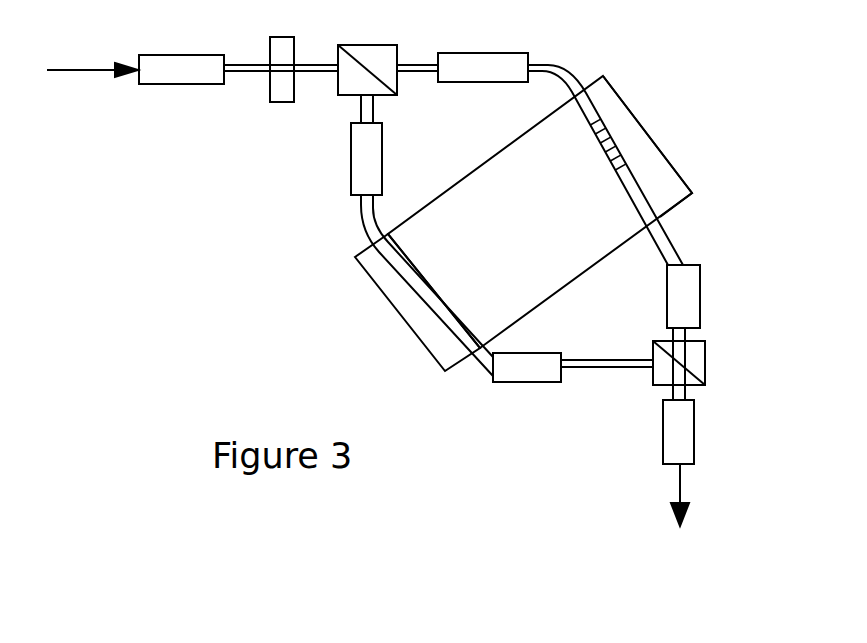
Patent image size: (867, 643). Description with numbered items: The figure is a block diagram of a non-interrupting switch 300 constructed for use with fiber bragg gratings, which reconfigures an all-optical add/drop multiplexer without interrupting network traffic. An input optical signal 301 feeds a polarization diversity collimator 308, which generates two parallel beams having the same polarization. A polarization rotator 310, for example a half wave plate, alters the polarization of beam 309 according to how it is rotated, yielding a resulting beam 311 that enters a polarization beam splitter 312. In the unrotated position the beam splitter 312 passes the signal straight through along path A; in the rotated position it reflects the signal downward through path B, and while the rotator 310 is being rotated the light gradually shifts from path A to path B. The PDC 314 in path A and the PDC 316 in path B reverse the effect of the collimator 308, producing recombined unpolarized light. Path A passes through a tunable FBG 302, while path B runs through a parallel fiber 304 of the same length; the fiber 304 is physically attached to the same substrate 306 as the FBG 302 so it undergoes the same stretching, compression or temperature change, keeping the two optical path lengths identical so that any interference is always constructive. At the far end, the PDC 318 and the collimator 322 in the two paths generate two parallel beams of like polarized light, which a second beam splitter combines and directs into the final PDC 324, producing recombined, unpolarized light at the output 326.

The non-interrupting switch 300 is at (298, 318).
The input optical signal 301 is at (92, 68).
The tunable FBG 302 is at (605, 153).
The parallel fiber 304 is at (380, 285).
The substrate 306 is at (684, 177).
The polarization diversity collimator 308 is at (181, 54).
The beam 309 is at (245, 76).
The polarization rotator 310 is at (280, 51).
The resulting beam 311 is at (320, 76).
The polarization beam splitter 312 is at (367, 54).
The PDC 314 is at (462, 52).
The PDC 316 is at (391, 145).
The PDC 318 is at (702, 332).
The path B output collimator 322 is at (573, 383).
The final PDC 324 is at (705, 432).
The output 326 is at (735, 512).